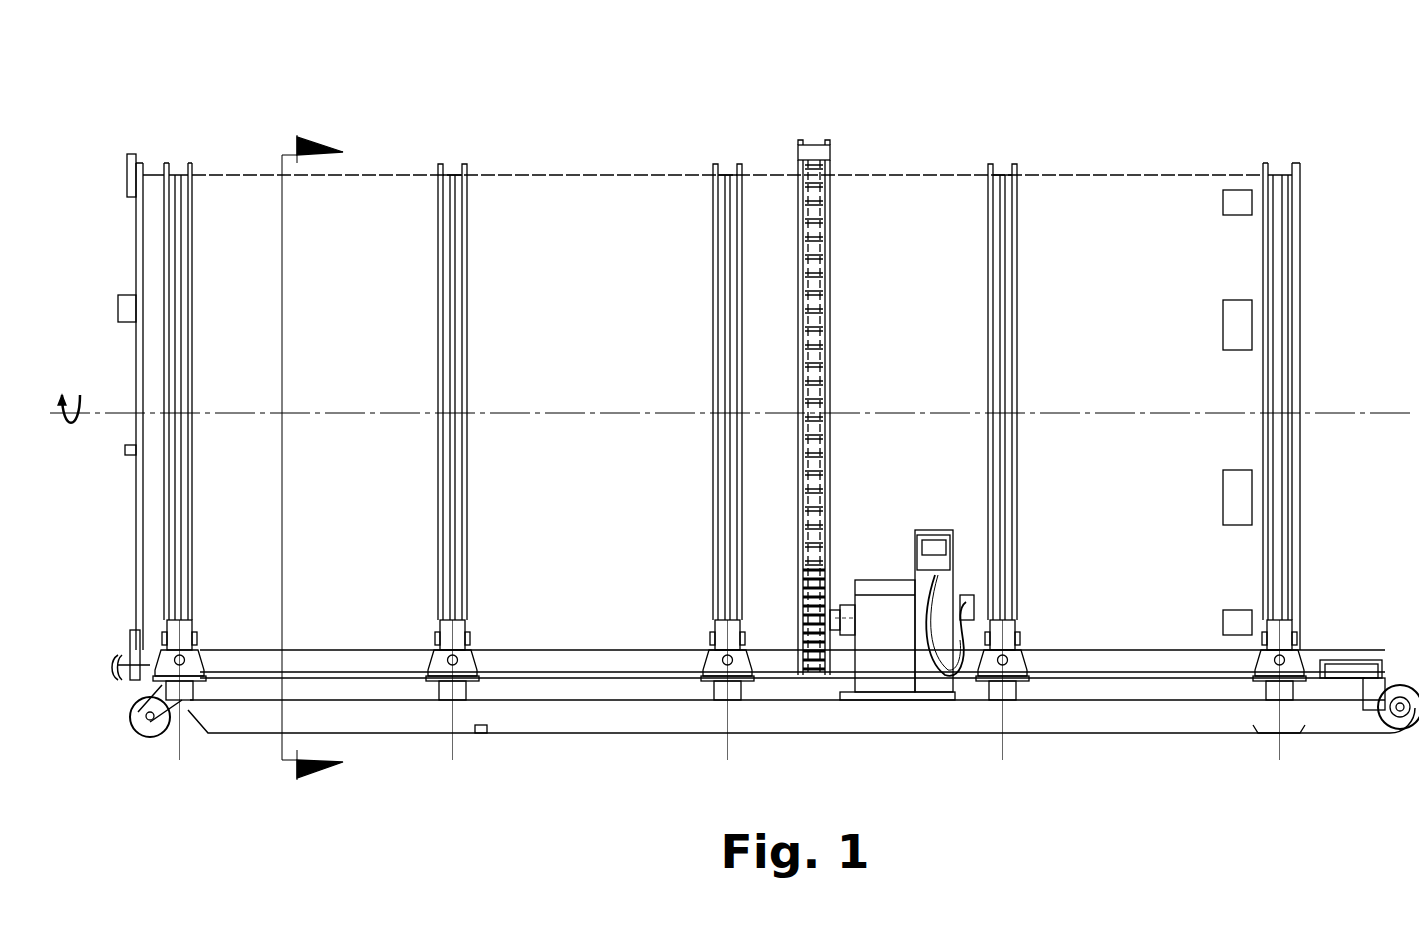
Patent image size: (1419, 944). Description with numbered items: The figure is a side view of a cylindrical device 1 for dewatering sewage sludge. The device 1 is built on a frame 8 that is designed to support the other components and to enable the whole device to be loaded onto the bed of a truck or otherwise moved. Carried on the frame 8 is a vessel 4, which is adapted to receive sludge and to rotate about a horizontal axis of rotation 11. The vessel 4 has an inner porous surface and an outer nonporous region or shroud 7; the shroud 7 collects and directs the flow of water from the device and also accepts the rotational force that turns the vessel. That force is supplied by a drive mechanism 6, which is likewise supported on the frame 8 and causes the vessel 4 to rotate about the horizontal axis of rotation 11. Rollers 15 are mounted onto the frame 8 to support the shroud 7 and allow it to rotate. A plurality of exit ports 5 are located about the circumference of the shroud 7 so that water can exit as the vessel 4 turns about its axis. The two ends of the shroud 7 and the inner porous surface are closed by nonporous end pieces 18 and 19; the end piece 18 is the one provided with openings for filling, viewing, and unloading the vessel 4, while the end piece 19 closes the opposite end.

The cylindrical device 1 is at (896, 93).
The vessel 4 is at (562, 200).
The exit ports 5 is at (1237, 203).
The drive mechanism 6 is at (888, 640).
The shroud 7 is at (1112, 172).
The frame 8 is at (238, 722).
The horizontal axis of rotation 11 is at (85, 413).
The rollers 15 is at (445, 700).
The end piece 18 is at (123, 252).
The end piece 19 is at (1298, 327).